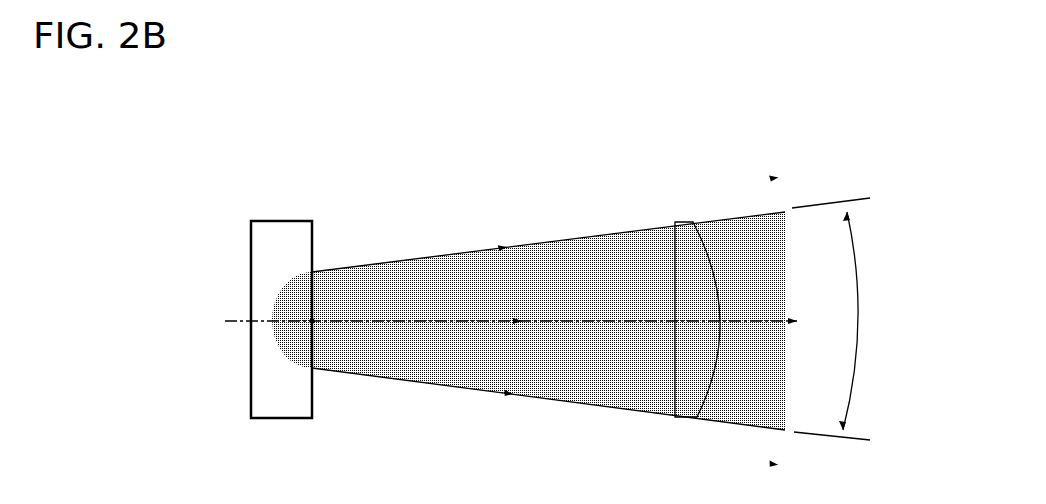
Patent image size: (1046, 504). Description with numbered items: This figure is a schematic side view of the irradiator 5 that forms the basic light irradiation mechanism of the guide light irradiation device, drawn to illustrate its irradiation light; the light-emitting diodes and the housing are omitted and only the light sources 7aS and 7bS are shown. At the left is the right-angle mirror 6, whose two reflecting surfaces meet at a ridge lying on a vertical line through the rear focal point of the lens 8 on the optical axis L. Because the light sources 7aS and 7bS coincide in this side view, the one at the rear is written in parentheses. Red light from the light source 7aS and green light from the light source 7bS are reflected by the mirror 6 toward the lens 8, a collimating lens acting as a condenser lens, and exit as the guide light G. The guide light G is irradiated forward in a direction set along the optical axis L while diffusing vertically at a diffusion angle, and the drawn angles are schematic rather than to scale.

The irradiator 5 is at (430, 289).
The right-angle mirror 6 is at (268, 272).
The light source 7bS is at (312, 321).
The light source 7aS is at (312, 321).
The lens 8 is at (688, 243).
The guide light G is at (541, 238).
The optical axis L is at (524, 324).